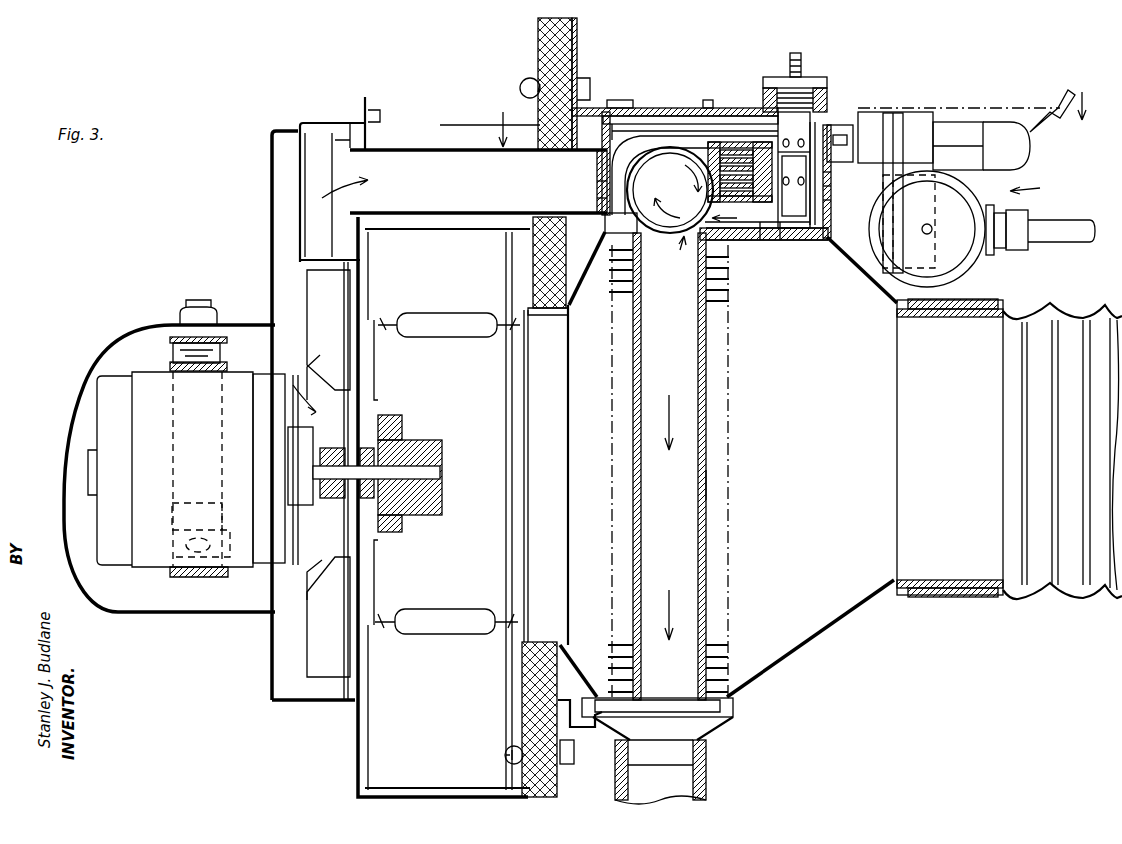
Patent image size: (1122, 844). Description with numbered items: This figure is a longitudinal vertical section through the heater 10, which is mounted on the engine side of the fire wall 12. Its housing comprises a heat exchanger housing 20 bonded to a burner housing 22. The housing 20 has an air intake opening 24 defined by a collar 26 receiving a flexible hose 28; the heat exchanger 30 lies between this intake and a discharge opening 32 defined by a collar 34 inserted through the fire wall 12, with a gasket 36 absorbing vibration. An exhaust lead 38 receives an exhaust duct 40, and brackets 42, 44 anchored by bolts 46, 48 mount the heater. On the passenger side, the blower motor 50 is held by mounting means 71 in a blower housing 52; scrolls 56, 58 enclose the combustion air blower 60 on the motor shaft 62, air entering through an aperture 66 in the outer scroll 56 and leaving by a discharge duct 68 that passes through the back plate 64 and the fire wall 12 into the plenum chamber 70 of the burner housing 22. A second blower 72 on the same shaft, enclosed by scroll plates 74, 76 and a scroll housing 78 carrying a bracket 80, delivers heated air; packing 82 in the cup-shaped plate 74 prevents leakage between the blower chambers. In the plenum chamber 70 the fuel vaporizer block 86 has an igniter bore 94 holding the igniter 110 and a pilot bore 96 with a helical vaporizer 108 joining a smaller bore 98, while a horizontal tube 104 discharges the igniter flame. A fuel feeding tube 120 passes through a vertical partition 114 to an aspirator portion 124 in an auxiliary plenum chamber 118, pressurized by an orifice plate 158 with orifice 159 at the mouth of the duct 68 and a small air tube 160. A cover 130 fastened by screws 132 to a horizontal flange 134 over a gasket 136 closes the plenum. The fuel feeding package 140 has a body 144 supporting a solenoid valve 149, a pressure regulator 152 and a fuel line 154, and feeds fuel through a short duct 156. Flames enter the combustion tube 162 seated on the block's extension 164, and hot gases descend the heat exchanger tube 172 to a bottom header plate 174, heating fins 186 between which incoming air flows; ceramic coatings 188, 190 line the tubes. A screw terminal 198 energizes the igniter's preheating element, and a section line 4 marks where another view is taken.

The section line 4- 4 is at (775, 119).
The heater 10 is at (850, 643).
The fire wall 12 is at (538, 32).
The heat exchanger housing 20 is at (598, 293).
The burner housing 22 is at (603, 139).
The air intake opening 24 is at (935, 459).
The collar 26 is at (948, 597).
The flexible hose 28 is at (1046, 600).
The heat exchanger 30 is at (739, 413).
The discharge opening 32 is at (532, 497).
The collar 34 is at (532, 355).
The gasket 36 is at (570, 300).
The exhaust lead 38 is at (707, 730).
The exhaust duct 40 is at (706, 786).
The bracket 42 is at (596, 108).
The bracket 44 is at (572, 727).
The bolt 46 is at (522, 86).
The bolt 48 is at (505, 753).
The blower motor 50 is at (105, 411).
The blower housing 52 is at (90, 368).
The outer blower scroll 56 is at (300, 183).
The inner blower scroll 58 is at (363, 118).
The blower 60 is at (306, 296).
The motor shaft 62 is at (422, 505).
The back plate 64 is at (368, 134).
The aperture 66 is at (300, 418).
The discharge duct 68 is at (446, 148).
The plenum chamber 70 is at (621, 223).
The motor mounting means 71 is at (166, 341).
The blower 72 is at (450, 313).
The outer scroll plate 74 is at (378, 276).
The inner scroll plate 76 is at (512, 268).
The scroll housing 78 is at (455, 232).
The bracket 80 is at (600, 148).
The packing 82 is at (402, 437).
The fuel vaporizer block 86 is at (780, 128).
The igniter bore 94 is at (795, 241).
The pilot burner bore 96 is at (722, 148).
The smaller vertical bore 98 is at (745, 240).
The horizontal tube 104 is at (735, 242).
The helical vaporizer 108 is at (740, 150).
The igniter 110 is at (836, 98).
The vertical partition 114 is at (836, 200).
The auxiliary plenum chamber 118 is at (834, 186).
The fuel feeding tube 120 is at (840, 125).
The aspirator portion 124 is at (833, 172).
The cover 130 is at (640, 124).
The screws 132 is at (618, 100).
The horizontal flange 134 is at (638, 116).
The gasket 136 is at (672, 131).
The fuel feeding package 140 is at (1040, 188).
The frame 144 is at (900, 115).
The solenoid-operated fuel valve 149 is at (965, 122).
The fuel pressure regulator 152 is at (965, 266).
The fuel line 154 is at (1060, 242).
The short duct 156 is at (880, 123).
The orifice plate 158 is at (597, 198).
The orifice 159 is at (597, 181).
The small air tube 160 is at (597, 166).
The combustion chamber tube 162 is at (640, 195).
The forwardly extending portion 164 is at (690, 148).
The heat exchanger tube 172 is at (706, 482).
The bottom header plate 174 is at (720, 717).
The heat-radiating fins 186 is at (729, 296).
The ceramic cement coating 188 is at (640, 170).
The ceramic cement coating 190 is at (641, 300).
The screw terminal 198 is at (801, 62).